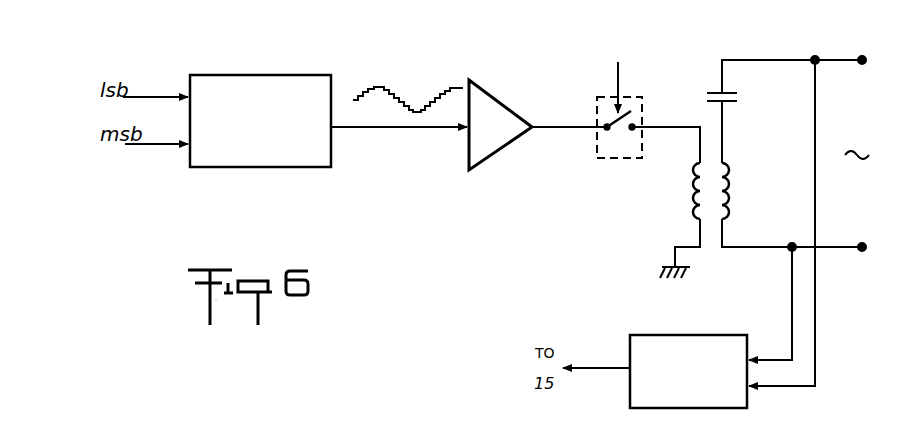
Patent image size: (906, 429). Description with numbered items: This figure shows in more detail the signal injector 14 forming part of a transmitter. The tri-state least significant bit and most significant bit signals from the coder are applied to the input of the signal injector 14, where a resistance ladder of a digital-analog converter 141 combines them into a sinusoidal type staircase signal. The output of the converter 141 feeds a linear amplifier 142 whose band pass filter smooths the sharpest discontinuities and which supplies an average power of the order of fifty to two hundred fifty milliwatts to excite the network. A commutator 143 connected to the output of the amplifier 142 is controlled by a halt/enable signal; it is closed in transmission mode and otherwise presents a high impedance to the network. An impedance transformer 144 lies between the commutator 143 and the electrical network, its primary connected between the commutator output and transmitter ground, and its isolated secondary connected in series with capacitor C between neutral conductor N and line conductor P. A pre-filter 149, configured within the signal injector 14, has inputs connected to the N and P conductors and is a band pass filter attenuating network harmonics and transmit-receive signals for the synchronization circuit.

The signal injector 14 is at (529, 209).
The digital-analog converter 141 is at (245, 73).
The linear amplifier 142 is at (492, 100).
The commutator 143 is at (615, 160).
The impedance transformer 144 is at (687, 194).
The pre-filter 149 is at (698, 340).